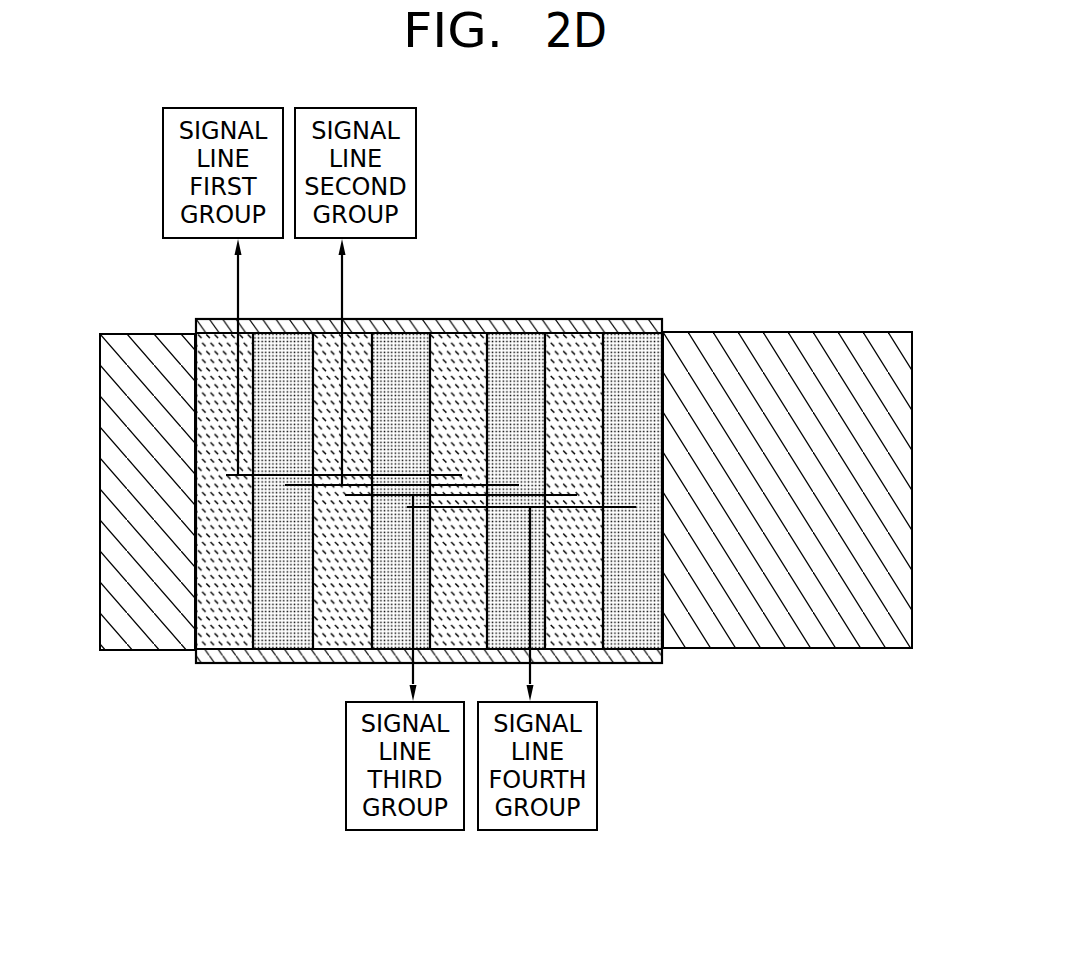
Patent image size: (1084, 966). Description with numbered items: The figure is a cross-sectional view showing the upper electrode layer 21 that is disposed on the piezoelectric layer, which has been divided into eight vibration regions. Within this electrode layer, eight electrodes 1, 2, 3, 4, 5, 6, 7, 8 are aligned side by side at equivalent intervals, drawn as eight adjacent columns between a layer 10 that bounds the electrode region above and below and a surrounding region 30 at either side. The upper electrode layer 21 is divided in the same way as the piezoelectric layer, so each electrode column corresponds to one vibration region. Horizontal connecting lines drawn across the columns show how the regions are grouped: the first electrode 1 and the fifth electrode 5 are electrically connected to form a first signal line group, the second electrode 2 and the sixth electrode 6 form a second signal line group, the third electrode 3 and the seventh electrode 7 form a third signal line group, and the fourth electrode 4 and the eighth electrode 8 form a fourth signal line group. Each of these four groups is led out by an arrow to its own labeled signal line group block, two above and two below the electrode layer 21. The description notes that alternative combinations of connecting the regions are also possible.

The pixel electrode region 10 is at (571, 328).
The upper electrode layer 21 is at (429, 453).
The peripheral substrate region 30 is at (773, 347).
The electrode 1 is at (224, 491).
The electrode 2 is at (283, 491).
The electrode 3 is at (342, 491).
The electrode 4 is at (401, 491).
The electrode 5 is at (458, 491).
The electrode 6 is at (516, 491).
The electrode 7 is at (574, 491).
The electrode 8 is at (632, 491).